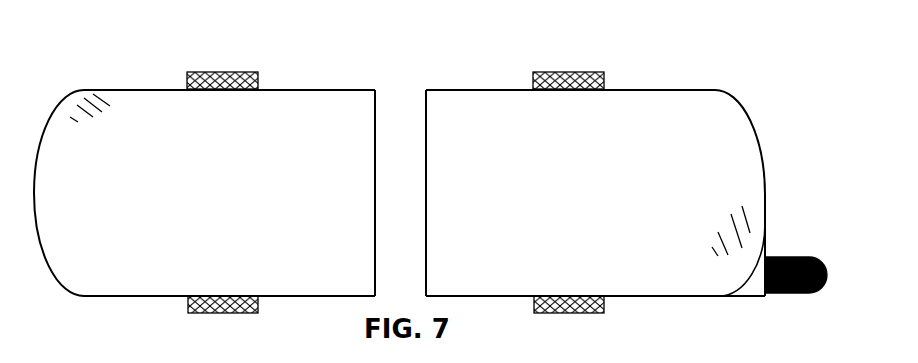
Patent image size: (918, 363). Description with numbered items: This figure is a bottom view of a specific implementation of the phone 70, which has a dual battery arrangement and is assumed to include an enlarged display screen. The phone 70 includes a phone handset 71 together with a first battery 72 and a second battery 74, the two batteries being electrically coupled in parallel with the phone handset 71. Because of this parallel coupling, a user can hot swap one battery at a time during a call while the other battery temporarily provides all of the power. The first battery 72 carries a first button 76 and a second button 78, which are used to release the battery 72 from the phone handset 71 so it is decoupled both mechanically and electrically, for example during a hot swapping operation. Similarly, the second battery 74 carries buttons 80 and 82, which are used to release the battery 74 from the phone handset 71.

The phone 70 is at (765, 28).
The phone handset 71 is at (767, 233).
The first battery 72 is at (125, 156).
The second battery 74 is at (504, 153).
The first button 76 is at (205, 72).
The second button 78 is at (207, 313).
The first button 80 is at (548, 72).
The second button 82 is at (588, 313).